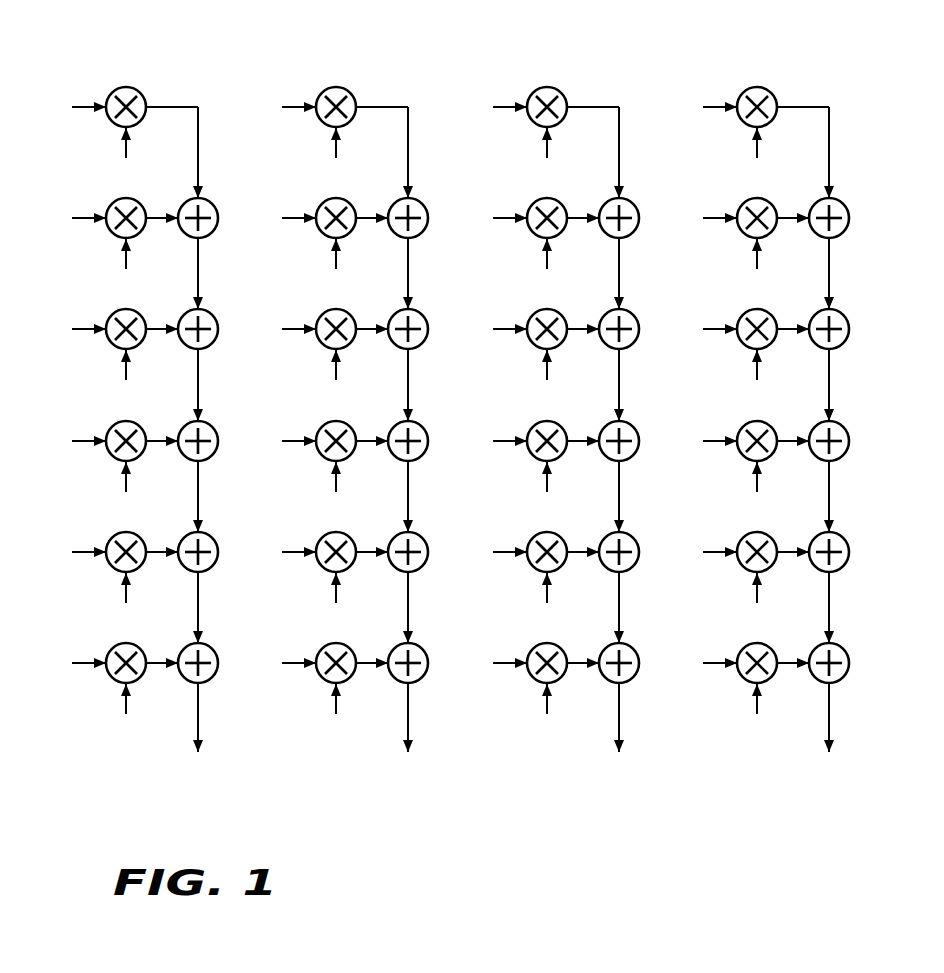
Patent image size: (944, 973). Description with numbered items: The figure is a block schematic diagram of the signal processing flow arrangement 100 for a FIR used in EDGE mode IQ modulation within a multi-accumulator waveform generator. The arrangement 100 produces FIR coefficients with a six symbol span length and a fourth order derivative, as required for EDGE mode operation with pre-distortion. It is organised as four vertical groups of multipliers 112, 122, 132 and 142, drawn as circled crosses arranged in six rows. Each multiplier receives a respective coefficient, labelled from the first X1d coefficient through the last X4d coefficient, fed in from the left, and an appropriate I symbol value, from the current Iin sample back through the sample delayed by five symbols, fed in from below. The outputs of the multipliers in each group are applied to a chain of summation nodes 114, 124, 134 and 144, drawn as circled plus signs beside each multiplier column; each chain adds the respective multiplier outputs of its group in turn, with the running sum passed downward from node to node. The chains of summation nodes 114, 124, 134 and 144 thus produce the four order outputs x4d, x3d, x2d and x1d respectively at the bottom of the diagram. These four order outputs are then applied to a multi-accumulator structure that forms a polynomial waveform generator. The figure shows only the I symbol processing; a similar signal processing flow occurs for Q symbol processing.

The signal processing flow arrangement 100 is at (158, 826).
The group of multipliers 112 is at (127, 84).
The summation nodes 114 is at (200, 92).
The group of multipliers 122 is at (356, 73).
The summation nodes 124 is at (431, 393).
The group of multipliers 132 is at (567, 73).
The summation nodes 134 is at (642, 393).
The group of multipliers 142 is at (769, 72).
The summation nodes 144 is at (827, 394).